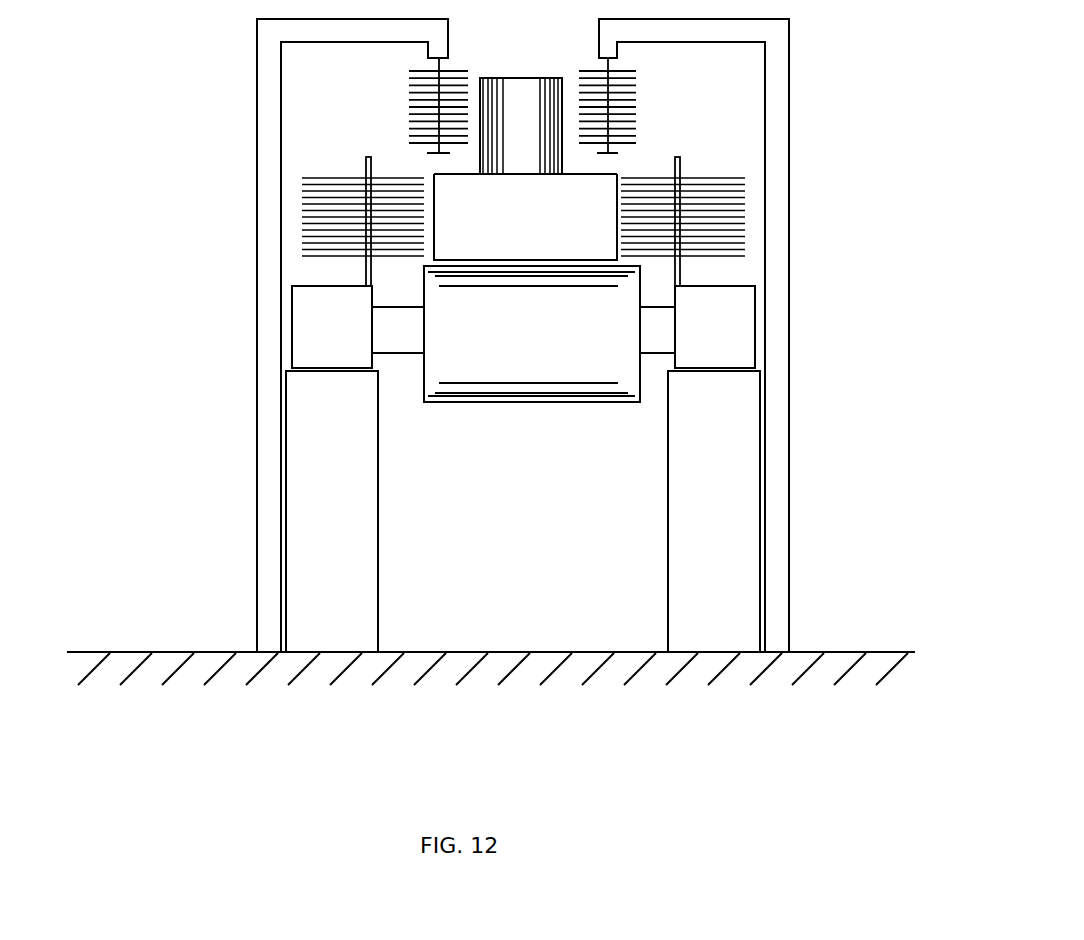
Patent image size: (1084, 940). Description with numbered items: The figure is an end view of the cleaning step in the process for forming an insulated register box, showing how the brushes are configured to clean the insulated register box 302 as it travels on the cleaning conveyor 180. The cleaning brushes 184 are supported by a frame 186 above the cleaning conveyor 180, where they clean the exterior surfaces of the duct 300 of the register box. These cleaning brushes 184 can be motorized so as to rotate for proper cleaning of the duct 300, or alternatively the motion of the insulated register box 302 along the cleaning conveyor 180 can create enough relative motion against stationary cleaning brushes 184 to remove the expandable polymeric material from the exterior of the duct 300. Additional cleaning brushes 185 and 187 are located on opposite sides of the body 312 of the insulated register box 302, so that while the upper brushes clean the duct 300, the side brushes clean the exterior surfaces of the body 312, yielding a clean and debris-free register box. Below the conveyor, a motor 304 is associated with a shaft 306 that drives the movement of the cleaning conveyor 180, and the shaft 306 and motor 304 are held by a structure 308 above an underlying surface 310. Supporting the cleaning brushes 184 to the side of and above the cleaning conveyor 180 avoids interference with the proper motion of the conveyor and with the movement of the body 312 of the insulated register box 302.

The cleaning conveyor 180 is at (611, 403).
The cleaning brushes 184 is at (640, 97).
The cleaning brushes 185 is at (735, 216).
The frame 186 is at (790, 113).
The cleaning brushes 187 is at (312, 213).
The duct 300 is at (523, 77).
The insulated register box 302 is at (617, 190).
The motor 304 is at (291, 330).
The shaft 306 is at (398, 355).
The structure 308 is at (378, 524).
The underlying surface 310 is at (507, 651).
The body 312 is at (437, 187).